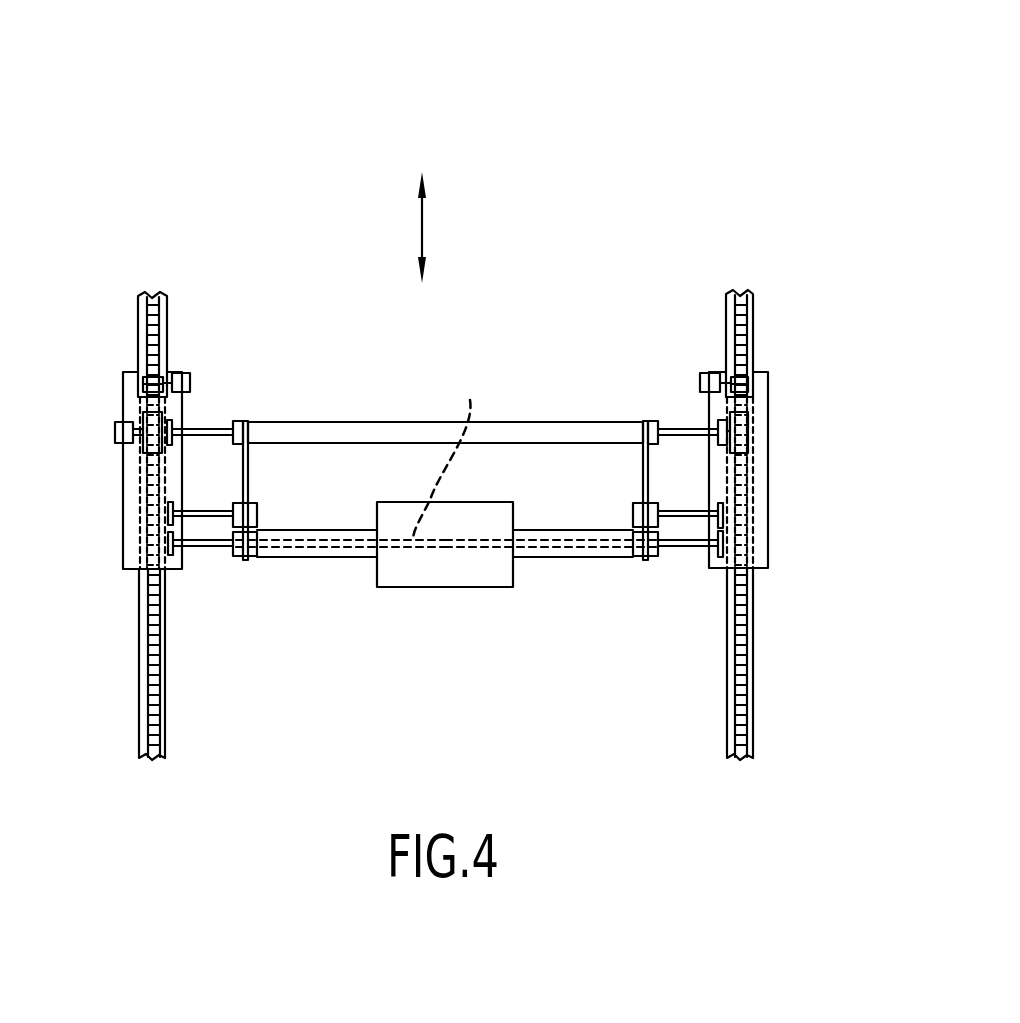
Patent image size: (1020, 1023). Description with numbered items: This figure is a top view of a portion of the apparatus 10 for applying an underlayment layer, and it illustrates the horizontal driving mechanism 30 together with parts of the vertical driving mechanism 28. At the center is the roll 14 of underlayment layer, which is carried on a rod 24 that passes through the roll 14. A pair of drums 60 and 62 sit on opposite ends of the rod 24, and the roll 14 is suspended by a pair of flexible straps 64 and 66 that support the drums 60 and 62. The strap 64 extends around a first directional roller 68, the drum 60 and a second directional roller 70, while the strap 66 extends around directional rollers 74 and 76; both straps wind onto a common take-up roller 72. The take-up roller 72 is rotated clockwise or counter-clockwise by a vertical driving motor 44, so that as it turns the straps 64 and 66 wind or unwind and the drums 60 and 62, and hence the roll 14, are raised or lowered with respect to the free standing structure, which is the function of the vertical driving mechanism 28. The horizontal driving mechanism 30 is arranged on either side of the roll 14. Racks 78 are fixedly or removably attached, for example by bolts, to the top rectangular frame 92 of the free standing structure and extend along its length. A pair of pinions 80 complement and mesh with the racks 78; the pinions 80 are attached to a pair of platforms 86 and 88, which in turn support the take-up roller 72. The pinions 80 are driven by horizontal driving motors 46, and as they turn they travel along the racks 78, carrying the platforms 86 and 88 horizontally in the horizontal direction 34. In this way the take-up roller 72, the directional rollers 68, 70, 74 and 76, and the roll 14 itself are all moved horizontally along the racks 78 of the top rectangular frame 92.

The apparatus 10 is at (664, 118).
The roll 14 is at (467, 570).
The rod 24 is at (444, 454).
The vertical driving mechanism 28 is at (700, 478).
The horizontal driving mechanism 30 is at (95, 320).
The horizontal direction 34 is at (422, 227).
The vertical driving motor 44 is at (115, 432).
The horizontal driving motors 46 is at (190, 383).
The drum 60 is at (280, 557).
The drum 62 is at (566, 557).
The strap 64 is at (247, 465).
The strap 66 is at (643, 465).
The first directional roller 68 is at (237, 517).
The second directional roller 70 is at (237, 555).
The take-up roller 72 is at (375, 422).
The directional roller 74 is at (655, 522).
The directional roller 76 is at (653, 552).
The racks 78 is at (152, 307).
The pinions 80 is at (150, 380).
The platform 86 is at (123, 562).
The platform 88 is at (767, 562).
The top rectangular frame 92 is at (165, 308).